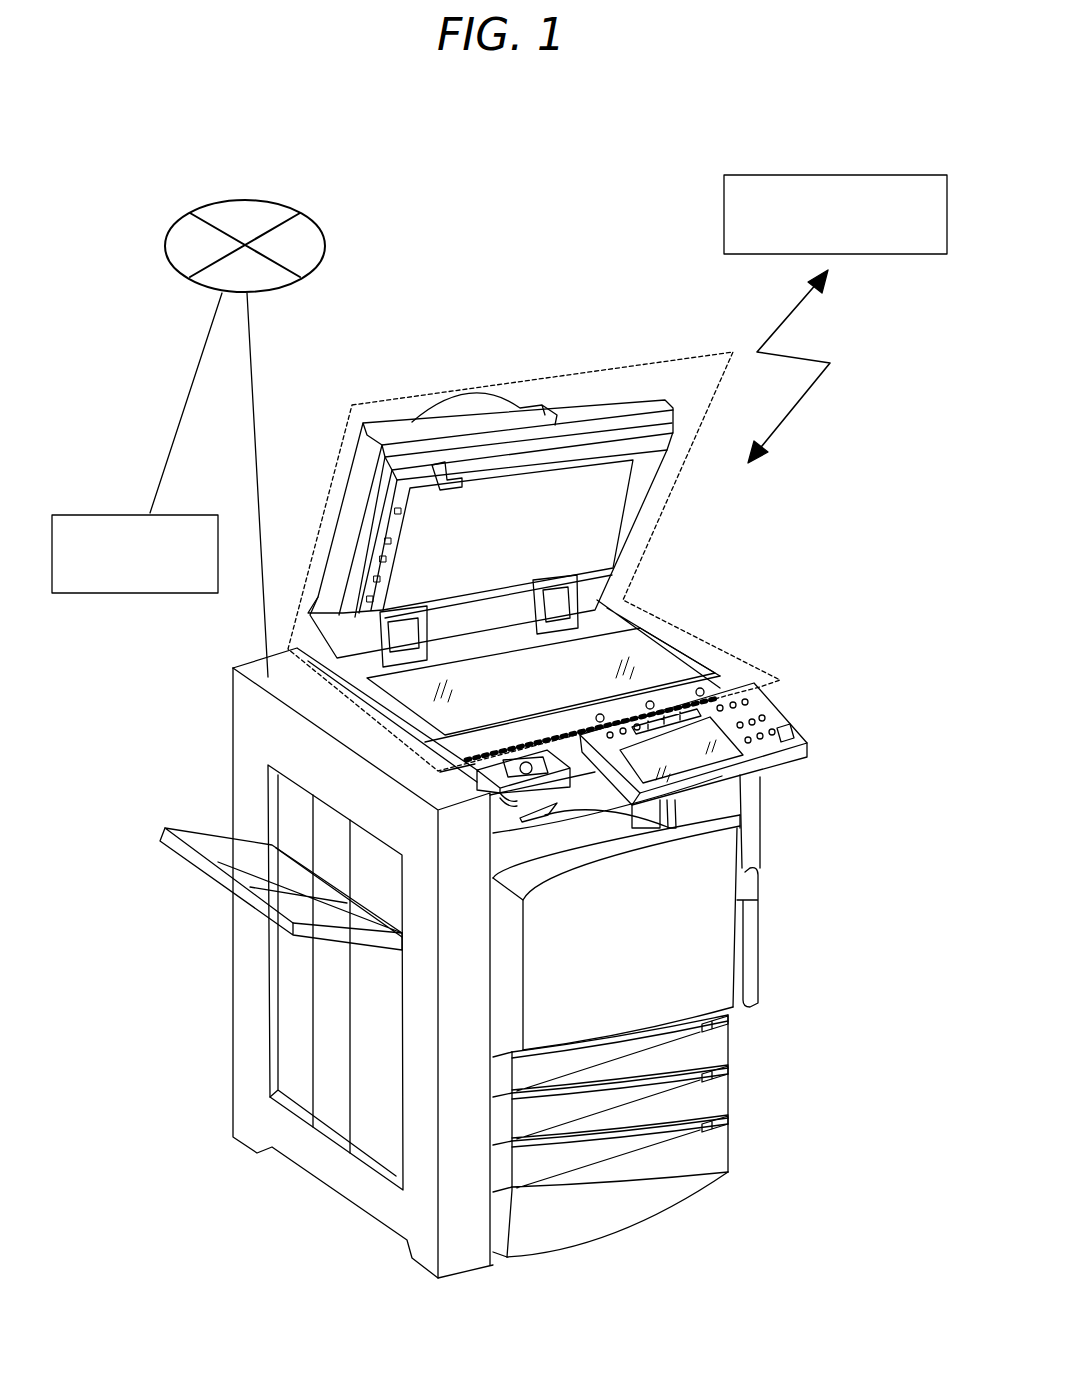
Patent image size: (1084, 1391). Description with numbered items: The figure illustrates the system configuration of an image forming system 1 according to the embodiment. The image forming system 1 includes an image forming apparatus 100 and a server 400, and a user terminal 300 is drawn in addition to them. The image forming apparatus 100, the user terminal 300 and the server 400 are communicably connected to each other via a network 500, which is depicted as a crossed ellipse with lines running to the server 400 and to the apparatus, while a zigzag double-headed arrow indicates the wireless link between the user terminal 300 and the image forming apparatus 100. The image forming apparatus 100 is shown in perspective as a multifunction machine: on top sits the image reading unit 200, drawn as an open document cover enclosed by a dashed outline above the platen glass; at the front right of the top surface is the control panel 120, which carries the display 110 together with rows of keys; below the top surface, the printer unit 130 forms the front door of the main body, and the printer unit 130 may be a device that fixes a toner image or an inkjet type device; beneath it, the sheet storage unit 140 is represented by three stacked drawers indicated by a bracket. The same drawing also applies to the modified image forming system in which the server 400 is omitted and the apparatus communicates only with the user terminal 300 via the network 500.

The image forming system 1 is at (397, 115).
The image forming apparatus 100 is at (573, 201).
The display 110 is at (705, 735).
The control panel 120 is at (790, 727).
The printer unit 130 is at (729, 959).
The sheet storage unit 140 is at (743, 1011).
The image reading unit 200 is at (677, 352).
The user terminal 300 is at (878, 175).
The server 400 is at (150, 515).
The network 500 is at (247, 200).